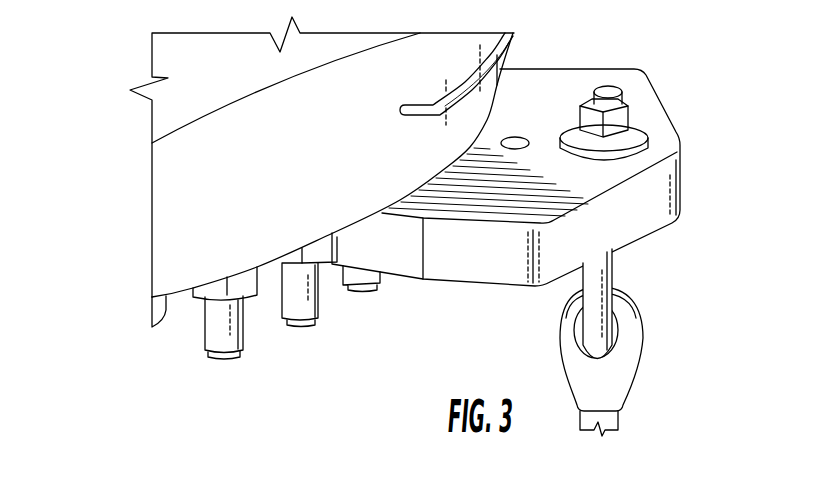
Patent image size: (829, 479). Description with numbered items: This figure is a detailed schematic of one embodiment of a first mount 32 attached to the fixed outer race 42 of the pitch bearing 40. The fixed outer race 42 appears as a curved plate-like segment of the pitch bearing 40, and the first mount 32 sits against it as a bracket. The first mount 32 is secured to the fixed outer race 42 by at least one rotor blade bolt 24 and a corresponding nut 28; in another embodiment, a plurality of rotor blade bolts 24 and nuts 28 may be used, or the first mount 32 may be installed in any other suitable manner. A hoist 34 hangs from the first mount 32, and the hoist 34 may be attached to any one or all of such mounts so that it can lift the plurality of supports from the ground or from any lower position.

The pitch bearing 40 is at (147, 152).
The fixed outer race 42 is at (170, 195).
The rotor blade bolt 24 is at (213, 328).
The nut 28 is at (243, 280).
The first mount 32 is at (660, 193).
The hoist 34 is at (624, 388).